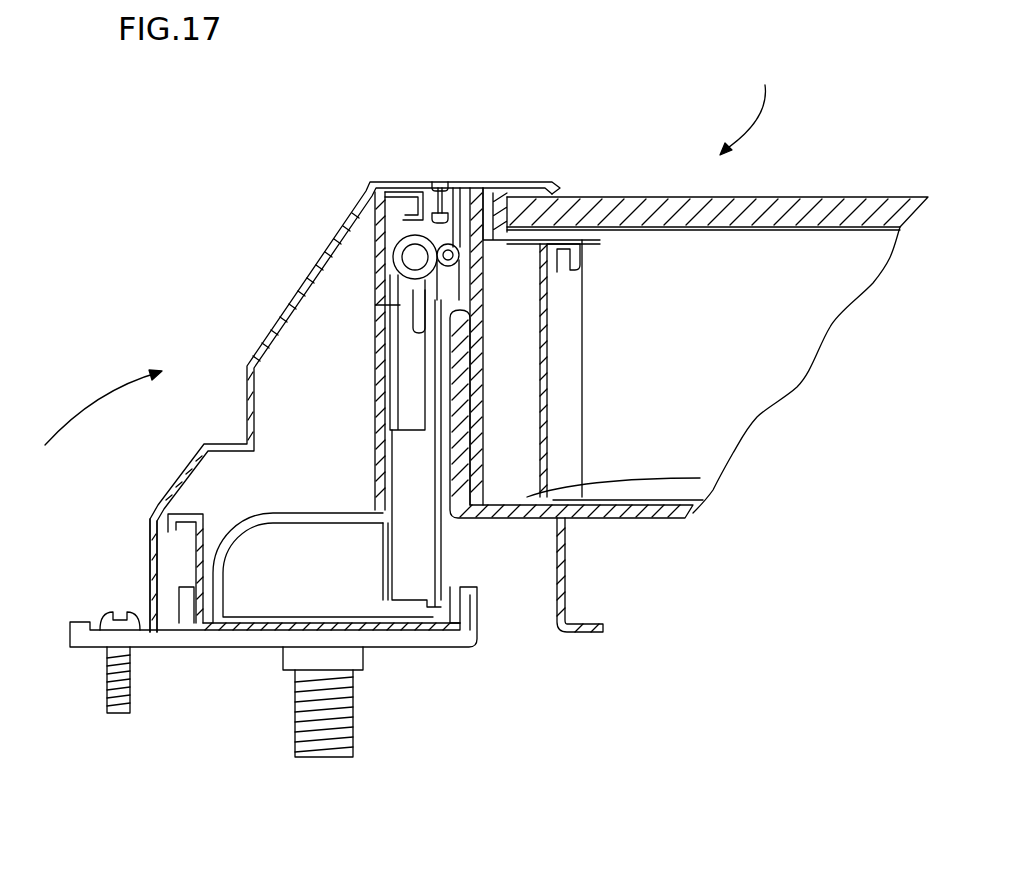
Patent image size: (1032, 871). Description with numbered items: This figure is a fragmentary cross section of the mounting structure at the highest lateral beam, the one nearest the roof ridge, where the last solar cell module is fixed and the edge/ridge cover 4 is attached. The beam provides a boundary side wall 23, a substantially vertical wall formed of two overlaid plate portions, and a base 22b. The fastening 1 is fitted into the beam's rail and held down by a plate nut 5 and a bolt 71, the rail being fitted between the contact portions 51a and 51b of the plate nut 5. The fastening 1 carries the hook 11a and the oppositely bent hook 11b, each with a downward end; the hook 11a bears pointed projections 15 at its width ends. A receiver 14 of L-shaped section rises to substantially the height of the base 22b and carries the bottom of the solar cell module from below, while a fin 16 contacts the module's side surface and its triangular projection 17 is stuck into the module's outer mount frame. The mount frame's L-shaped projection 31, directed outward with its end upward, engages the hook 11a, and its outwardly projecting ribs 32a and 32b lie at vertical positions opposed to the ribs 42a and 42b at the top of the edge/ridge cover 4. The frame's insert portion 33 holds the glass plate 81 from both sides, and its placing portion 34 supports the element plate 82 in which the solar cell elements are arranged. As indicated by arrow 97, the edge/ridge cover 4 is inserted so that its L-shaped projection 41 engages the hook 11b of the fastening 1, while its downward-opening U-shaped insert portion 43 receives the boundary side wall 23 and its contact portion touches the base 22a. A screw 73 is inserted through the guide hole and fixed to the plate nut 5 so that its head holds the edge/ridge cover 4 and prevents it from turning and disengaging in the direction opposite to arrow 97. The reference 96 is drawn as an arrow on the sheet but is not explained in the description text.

The fastening 1 is at (415, 570).
The edge/ridge cover 4 is at (150, 550).
The plate nut 5 is at (178, 640).
The hook 11a is at (456, 190).
The hook 11b is at (400, 245).
The receiver 14 is at (275, 523).
The projection 15 is at (490, 190).
The fin 16 is at (420, 540).
The projection 17 is at (395, 436).
The base 22a is at (705, 480).
The base 22b is at (168, 513).
The boundary side wall 23 is at (450, 362).
The L-shaped projection 31 is at (440, 280).
The rib 32a is at (441, 185).
The rib 32b is at (425, 185).
The insert portion 33 is at (545, 190).
The placing portion 34 is at (690, 509).
The L-shaped projection 41 is at (430, 270).
The rib 42a is at (395, 183).
The rib 42b is at (410, 215).
The insert portion 43 is at (400, 305).
The contact portion 51a is at (470, 612).
The contact portion 51b is at (185, 594).
The bolt 71 is at (315, 740).
The screw 73 is at (110, 628).
The glass plate 81 is at (655, 197).
The element plate 82 is at (857, 250).
The direction arrow 96 is at (742, 104).
The arrow 97 is at (93, 406).